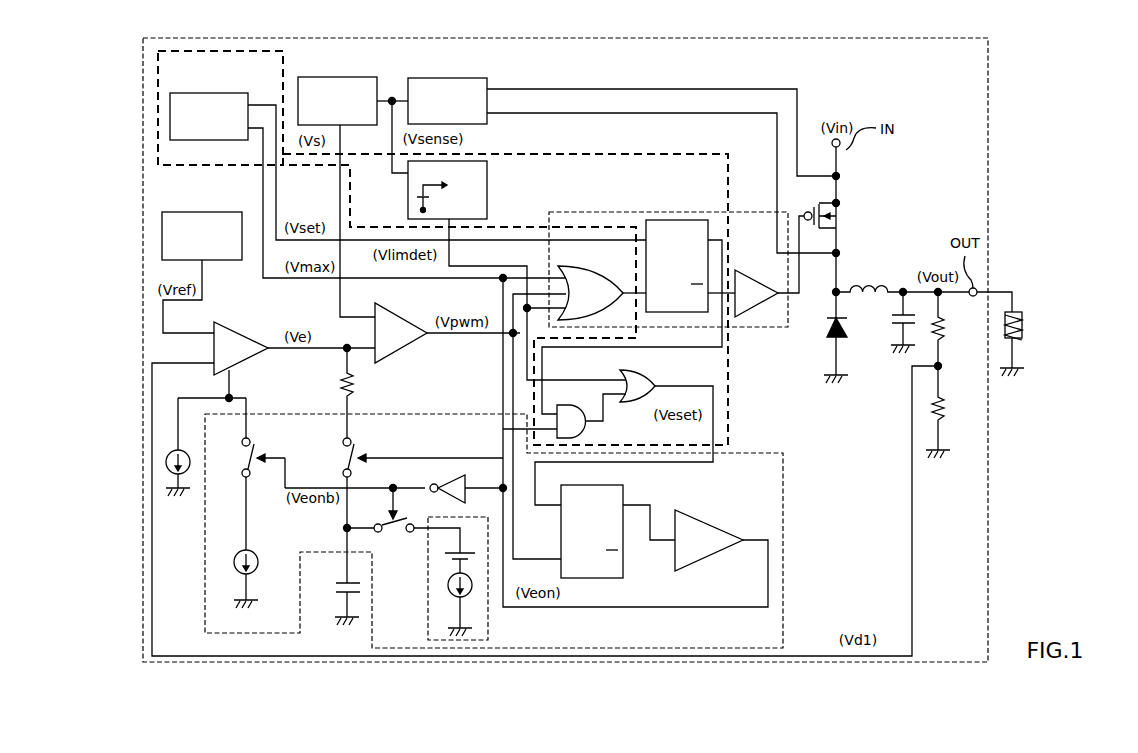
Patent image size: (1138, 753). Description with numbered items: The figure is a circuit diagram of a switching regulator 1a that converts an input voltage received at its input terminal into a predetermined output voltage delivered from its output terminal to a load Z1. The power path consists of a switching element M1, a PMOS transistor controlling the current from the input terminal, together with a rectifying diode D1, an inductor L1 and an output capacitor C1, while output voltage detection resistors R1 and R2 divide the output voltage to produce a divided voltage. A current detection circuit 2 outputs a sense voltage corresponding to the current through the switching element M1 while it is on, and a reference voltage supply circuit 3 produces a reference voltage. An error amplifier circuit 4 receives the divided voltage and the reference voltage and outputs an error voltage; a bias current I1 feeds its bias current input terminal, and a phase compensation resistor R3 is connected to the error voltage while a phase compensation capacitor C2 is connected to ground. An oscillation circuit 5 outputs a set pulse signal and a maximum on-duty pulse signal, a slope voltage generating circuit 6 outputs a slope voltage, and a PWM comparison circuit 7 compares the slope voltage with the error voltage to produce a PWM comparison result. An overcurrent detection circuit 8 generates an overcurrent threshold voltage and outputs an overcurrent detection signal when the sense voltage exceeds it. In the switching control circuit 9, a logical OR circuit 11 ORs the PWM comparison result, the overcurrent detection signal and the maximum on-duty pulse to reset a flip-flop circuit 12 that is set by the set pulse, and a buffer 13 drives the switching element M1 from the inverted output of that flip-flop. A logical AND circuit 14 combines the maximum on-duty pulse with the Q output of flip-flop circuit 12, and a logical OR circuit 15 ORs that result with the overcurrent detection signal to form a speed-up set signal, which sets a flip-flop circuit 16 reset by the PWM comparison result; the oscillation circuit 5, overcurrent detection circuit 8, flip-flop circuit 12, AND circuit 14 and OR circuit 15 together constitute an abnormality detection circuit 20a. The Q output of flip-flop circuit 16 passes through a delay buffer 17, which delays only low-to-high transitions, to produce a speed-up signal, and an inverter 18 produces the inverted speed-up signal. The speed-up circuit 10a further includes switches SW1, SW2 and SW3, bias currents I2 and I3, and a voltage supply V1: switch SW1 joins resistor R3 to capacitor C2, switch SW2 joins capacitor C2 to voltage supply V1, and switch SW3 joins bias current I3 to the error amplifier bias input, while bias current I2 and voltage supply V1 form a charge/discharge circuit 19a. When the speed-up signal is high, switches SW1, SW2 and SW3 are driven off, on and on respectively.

The switching regulator 1a is at (988, 150).
The current detection circuit 2 is at (472, 78).
The reference voltage supply circuit 3 is at (222, 212).
The error amplifier circuit 4 is at (243, 330).
The oscillation circuit 5 is at (227, 93).
The slope voltage generating circuit 6 is at (363, 77).
The PWM comparison circuit 7 is at (400, 313).
The overcurrent detection circuit 8 is at (487, 181).
The switching control circuit 9 is at (592, 212).
The speed-up circuit 10a is at (783, 470).
The logical OR circuit 11 is at (586, 266).
The flip-flop circuit 12 is at (690, 220).
The buffer 13 is at (751, 272).
The logical AND circuit 14 is at (586, 437).
The logical OR circuit 15 is at (640, 372).
The flip-flop circuit 16 is at (623, 488).
The delay buffer 17 is at (722, 522).
The inverter 18 is at (447, 474).
The charge/discharge circuit 19a is at (488, 627).
The abnormality detection circuit 20a is at (728, 416).
The switching element M1 is at (834, 215).
The inductor L1 is at (874, 280).
The output capacitor C1 is at (891, 322).
The output voltage detection resistor R1 is at (950, 329).
The output voltage detection resistor R2 is at (947, 412).
The phase compensation resistor R3 is at (335, 374).
The phase compensation capacitor C2 is at (336, 576).
The rectifying diode D1 is at (826, 332).
The load Z1 is at (1016, 310).
The bias current I1 is at (181, 447).
The bias current I2 is at (462, 604).
The bias current I3 is at (236, 579).
The switch SW1 is at (342, 455).
The switch SW2 is at (394, 536).
The switch SW3 is at (255, 467).
The voltage supply V1 is at (456, 552).